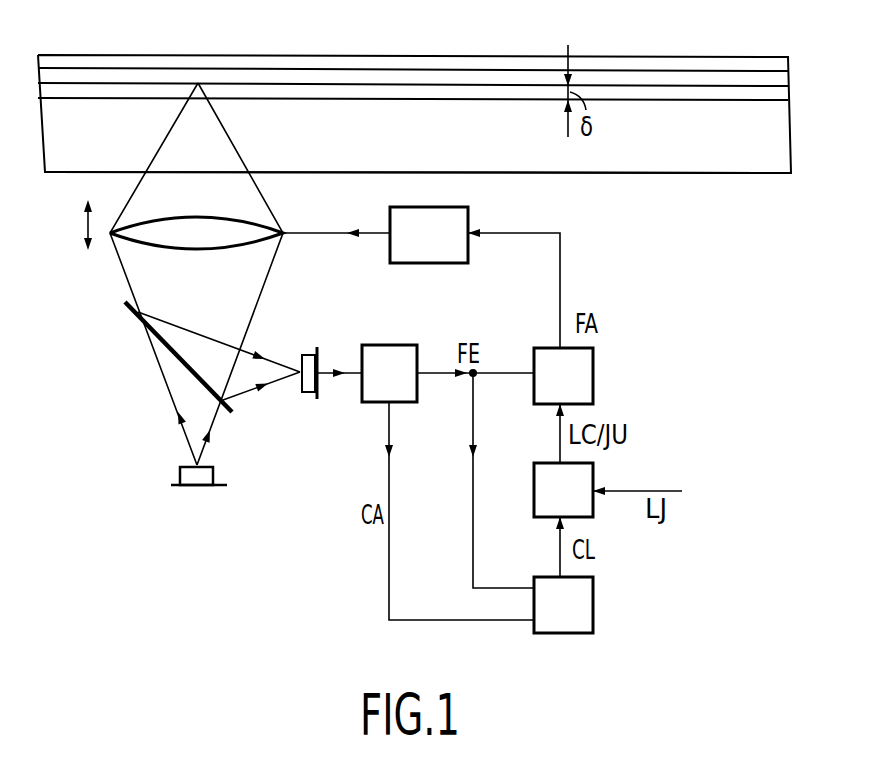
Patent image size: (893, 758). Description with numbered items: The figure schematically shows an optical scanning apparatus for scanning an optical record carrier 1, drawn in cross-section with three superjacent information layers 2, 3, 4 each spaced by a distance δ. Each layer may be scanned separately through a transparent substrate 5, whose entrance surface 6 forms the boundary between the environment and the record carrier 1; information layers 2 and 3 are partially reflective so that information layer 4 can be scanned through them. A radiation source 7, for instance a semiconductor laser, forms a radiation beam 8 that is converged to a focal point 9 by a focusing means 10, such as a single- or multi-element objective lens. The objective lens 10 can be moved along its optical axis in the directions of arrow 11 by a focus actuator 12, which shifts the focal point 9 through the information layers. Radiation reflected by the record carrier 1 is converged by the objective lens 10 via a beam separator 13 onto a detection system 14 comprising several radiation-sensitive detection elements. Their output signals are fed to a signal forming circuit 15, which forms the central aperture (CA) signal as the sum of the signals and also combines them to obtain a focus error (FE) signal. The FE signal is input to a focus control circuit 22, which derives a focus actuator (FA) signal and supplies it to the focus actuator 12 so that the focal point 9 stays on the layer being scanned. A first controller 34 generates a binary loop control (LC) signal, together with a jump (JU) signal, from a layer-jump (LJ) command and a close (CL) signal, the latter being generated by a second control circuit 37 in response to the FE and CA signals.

The optical record carrier 1 is at (833, 41).
The information layer 2 is at (728, 99).
The information layer 3 is at (690, 85).
The information layer 4 is at (665, 70).
The transparent substrate 5 is at (725, 153).
The entrance surface 6 is at (683, 174).
The radiation source 7 is at (199, 478).
The radiation beam 8 is at (168, 391).
The focal point 9 is at (198, 85).
The focusing means 10 is at (140, 248).
The direction of objective lens movement 11 is at (85, 230).
The focus actuator 12 is at (427, 265).
The beam separator 13 is at (133, 317).
The detection system 14 is at (307, 395).
The signal forming circuit 15 is at (377, 403).
The focus control circuit 22 is at (593, 373).
The first controller 34 is at (593, 473).
The second control circuit 37 is at (593, 606).